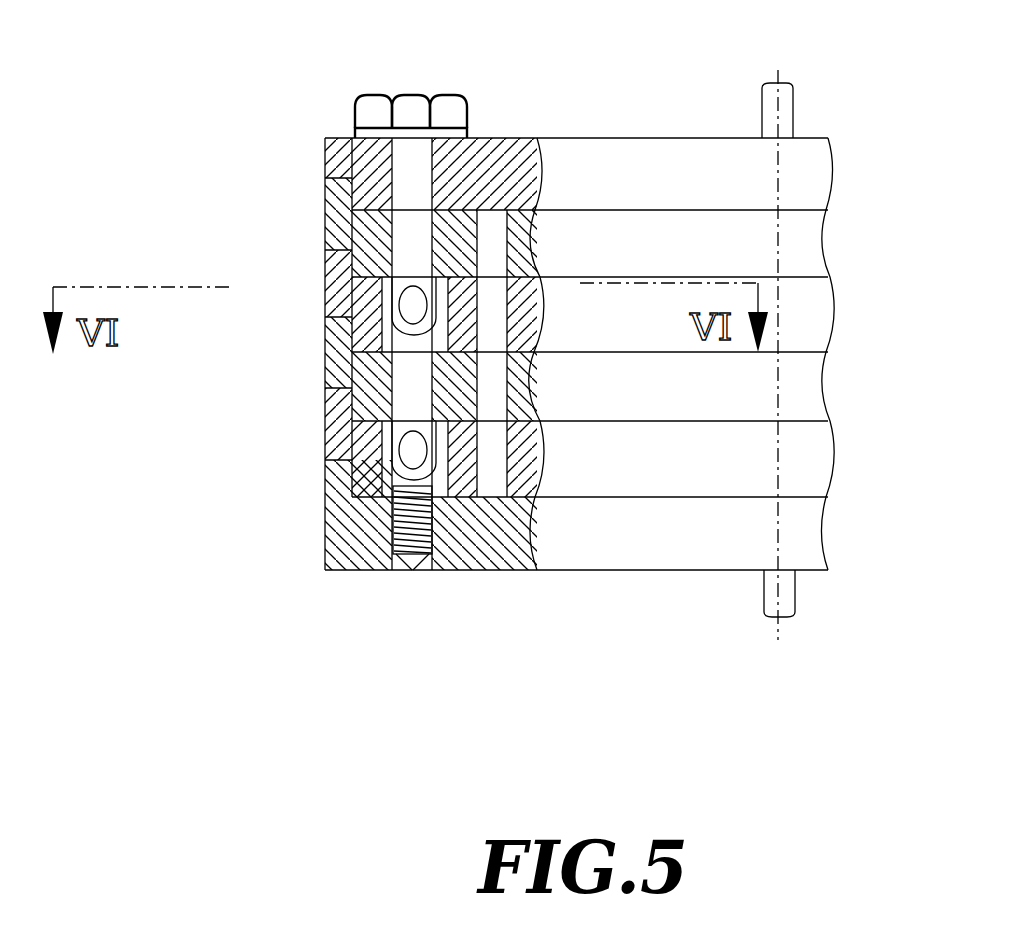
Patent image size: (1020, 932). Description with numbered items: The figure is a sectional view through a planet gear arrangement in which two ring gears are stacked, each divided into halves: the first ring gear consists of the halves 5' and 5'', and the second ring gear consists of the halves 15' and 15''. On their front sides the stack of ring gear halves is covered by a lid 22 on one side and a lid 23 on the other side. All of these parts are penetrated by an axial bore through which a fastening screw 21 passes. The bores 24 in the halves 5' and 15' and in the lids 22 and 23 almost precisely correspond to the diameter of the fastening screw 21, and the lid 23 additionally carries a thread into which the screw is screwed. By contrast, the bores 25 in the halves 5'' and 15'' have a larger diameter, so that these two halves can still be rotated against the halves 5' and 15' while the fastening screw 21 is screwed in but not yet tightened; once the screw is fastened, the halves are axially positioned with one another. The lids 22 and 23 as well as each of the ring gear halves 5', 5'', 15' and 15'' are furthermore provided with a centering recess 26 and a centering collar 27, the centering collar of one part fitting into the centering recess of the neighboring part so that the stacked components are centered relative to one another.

The ring gear half 5' is at (590, 353).
The ring gear half 5'' is at (590, 314).
The ring gear half 15' is at (590, 386).
The ring gear half 15'' is at (590, 459).
The fastening screw 21 is at (413, 178).
The lid 22 is at (510, 175).
The lid 23 is at (493, 537).
The bore 24 is at (407, 226).
The bore 25 is at (392, 337).
The centering recess 26 is at (363, 404).
The centering collar 27 is at (343, 512).